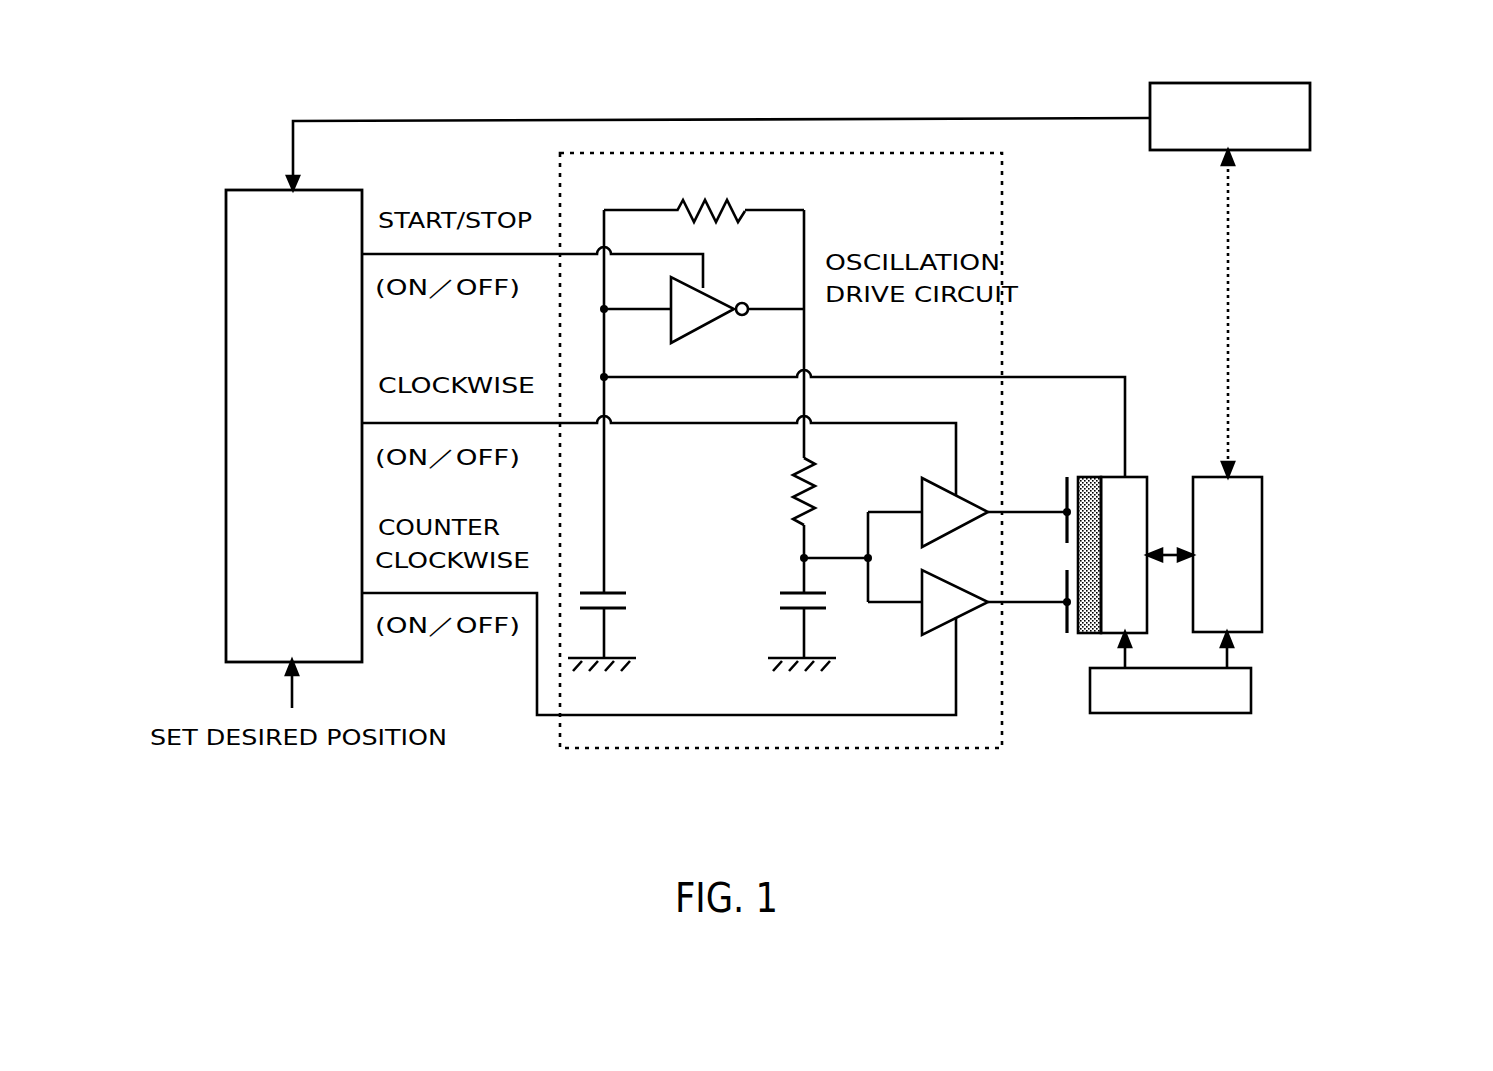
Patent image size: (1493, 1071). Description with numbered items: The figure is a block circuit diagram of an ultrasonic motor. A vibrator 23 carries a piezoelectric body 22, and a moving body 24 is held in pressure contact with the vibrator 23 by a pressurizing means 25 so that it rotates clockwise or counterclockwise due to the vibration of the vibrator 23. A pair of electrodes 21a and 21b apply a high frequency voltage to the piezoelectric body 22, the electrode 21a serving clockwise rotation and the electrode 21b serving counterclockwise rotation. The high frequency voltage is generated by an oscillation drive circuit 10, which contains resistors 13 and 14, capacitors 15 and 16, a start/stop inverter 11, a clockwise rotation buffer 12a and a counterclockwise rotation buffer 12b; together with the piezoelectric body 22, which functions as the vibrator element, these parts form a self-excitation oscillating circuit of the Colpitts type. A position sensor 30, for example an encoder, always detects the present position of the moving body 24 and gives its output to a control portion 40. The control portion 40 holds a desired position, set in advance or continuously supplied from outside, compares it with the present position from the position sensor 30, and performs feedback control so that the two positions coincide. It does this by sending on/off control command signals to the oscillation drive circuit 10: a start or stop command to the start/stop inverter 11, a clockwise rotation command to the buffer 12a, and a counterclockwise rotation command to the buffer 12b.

The oscillation drive circuit 10 is at (977, 223).
The start/stop inverter 11 is at (715, 312).
The clockwise rotation buffer 12a is at (948, 503).
The counterclockwise rotation buffer 12b is at (945, 613).
The resistor 13 is at (722, 190).
The resistor 14 is at (793, 470).
The capacitor 15 is at (615, 590).
The capacitor 16 is at (795, 590).
The electrode 21a is at (1062, 490).
The electrode 21b is at (1062, 620).
The piezoelectric body 22 is at (1097, 488).
The vibrator 23 is at (1137, 488).
The moving body 24 is at (1245, 488).
The pressurizing means 25 is at (1172, 713).
The position sensor 30 is at (1213, 150).
The control portion 40 is at (322, 207).